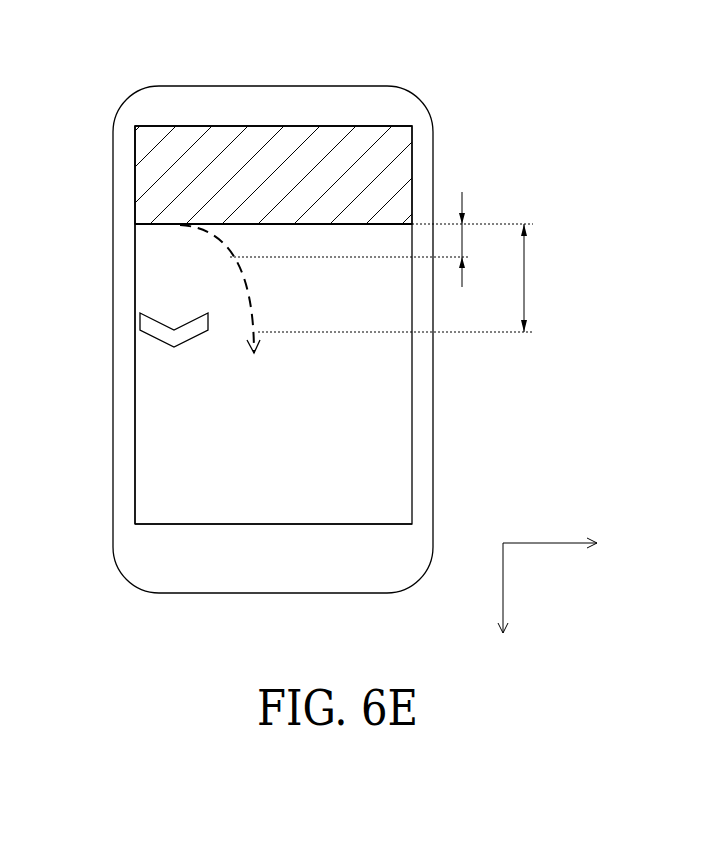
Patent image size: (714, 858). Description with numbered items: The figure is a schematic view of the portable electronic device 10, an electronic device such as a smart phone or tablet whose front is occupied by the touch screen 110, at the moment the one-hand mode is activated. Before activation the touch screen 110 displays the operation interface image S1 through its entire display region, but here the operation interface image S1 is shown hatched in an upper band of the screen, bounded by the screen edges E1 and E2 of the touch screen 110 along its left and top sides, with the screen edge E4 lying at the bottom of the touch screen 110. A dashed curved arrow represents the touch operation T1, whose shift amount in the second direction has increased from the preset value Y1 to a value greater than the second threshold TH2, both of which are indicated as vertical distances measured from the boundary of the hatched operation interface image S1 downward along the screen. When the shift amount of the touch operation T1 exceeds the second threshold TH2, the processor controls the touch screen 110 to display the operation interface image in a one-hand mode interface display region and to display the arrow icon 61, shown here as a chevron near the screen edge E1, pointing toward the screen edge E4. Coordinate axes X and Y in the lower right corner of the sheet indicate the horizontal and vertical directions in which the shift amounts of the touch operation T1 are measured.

The portable electronic device 10 is at (193, 86).
The touch screen 110 is at (357, 126).
The operation interface image S1 is at (323, 242).
The touch operation T1 is at (135, 226).
The screen edge E1 is at (135, 155).
The screen edge E2 is at (240, 126).
The screen edge E4 is at (207, 524).
The arrow icon 61 is at (150, 335).
The preset value Y1 is at (478, 239).
The second threshold TH2 is at (547, 278).
The X axis X is at (561, 543).
The Y axis Y is at (502, 607).